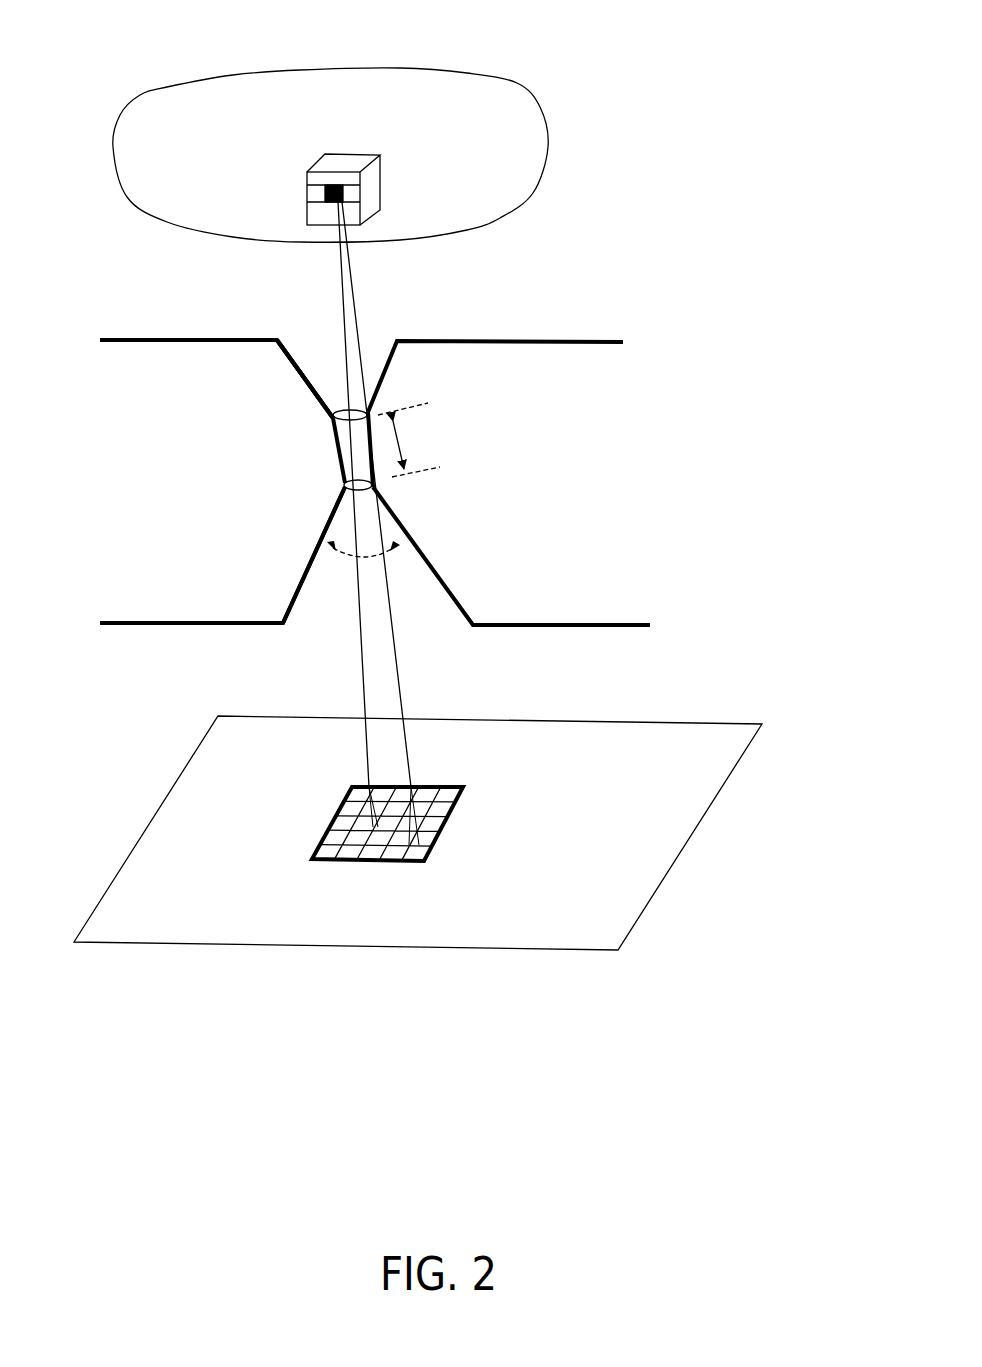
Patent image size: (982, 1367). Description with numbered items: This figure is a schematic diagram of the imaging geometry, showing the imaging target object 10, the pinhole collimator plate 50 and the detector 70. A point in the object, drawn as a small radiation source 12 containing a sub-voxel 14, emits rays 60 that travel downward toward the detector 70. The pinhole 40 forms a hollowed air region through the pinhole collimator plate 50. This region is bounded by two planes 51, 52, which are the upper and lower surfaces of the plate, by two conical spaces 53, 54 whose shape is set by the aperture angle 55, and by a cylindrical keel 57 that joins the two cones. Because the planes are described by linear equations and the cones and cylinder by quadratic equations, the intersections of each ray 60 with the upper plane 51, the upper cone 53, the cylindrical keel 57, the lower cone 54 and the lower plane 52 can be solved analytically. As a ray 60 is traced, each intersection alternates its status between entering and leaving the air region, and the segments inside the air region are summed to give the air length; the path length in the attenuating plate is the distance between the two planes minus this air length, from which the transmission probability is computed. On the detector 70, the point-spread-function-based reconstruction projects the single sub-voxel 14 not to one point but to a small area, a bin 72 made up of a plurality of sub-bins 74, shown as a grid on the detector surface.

The imaging target object 10 is at (500, 97).
The radiation source 12 is at (345, 158).
The sub-voxel 14 is at (308, 190).
The pinhole 40 is at (308, 347).
The pinhole collimator plate 50 is at (361, 470).
The upper plane 51 is at (598, 333).
The lower plane 52 is at (592, 633).
The upper cone 53 is at (302, 379).
The lower cone 54 is at (292, 587).
The aperture angle 55 is at (338, 553).
The cylindrical keel 57 is at (337, 447).
The ray 60 is at (393, 660).
The detector 70 is at (157, 931).
The bin 72 is at (468, 789).
The sub-bins 74 is at (430, 818).